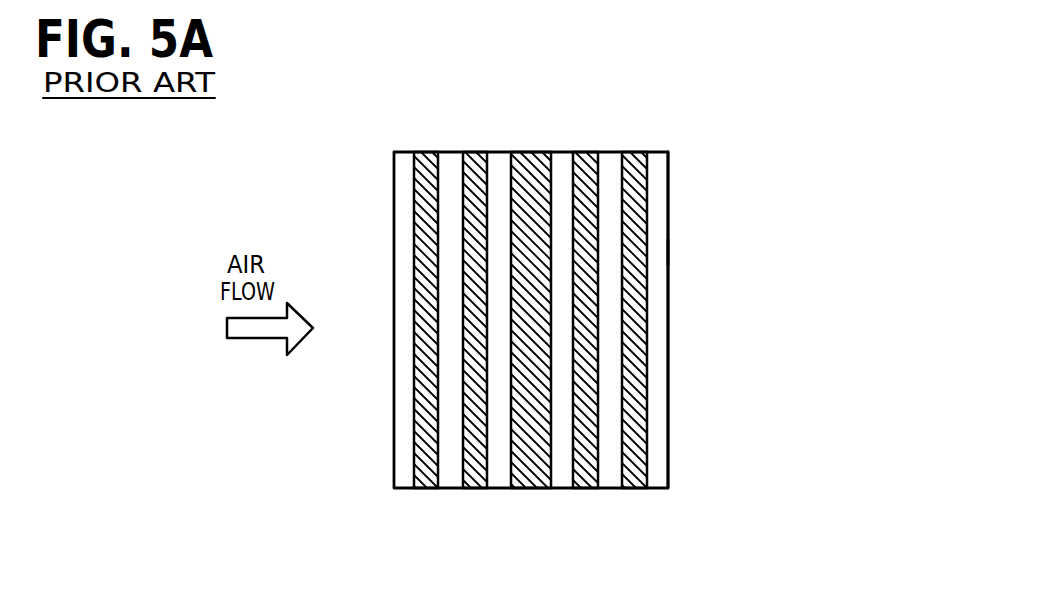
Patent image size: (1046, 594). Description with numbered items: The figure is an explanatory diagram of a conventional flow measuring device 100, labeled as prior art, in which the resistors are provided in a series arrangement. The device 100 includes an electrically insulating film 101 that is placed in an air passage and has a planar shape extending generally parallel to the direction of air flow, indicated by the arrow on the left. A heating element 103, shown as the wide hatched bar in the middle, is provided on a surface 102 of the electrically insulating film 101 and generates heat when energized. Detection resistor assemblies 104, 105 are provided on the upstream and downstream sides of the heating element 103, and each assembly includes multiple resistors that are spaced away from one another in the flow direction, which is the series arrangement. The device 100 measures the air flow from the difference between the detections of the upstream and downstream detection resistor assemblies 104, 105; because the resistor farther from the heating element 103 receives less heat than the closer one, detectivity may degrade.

The flow measuring device 100 is at (677, 135).
The electrically insulating film 101 is at (668, 196).
The surface 102 is at (657, 252).
The heating element 103 is at (540, 315).
The detection resistor assembly 104 is at (497, 498).
The detection resistor assembly 105 is at (658, 498).